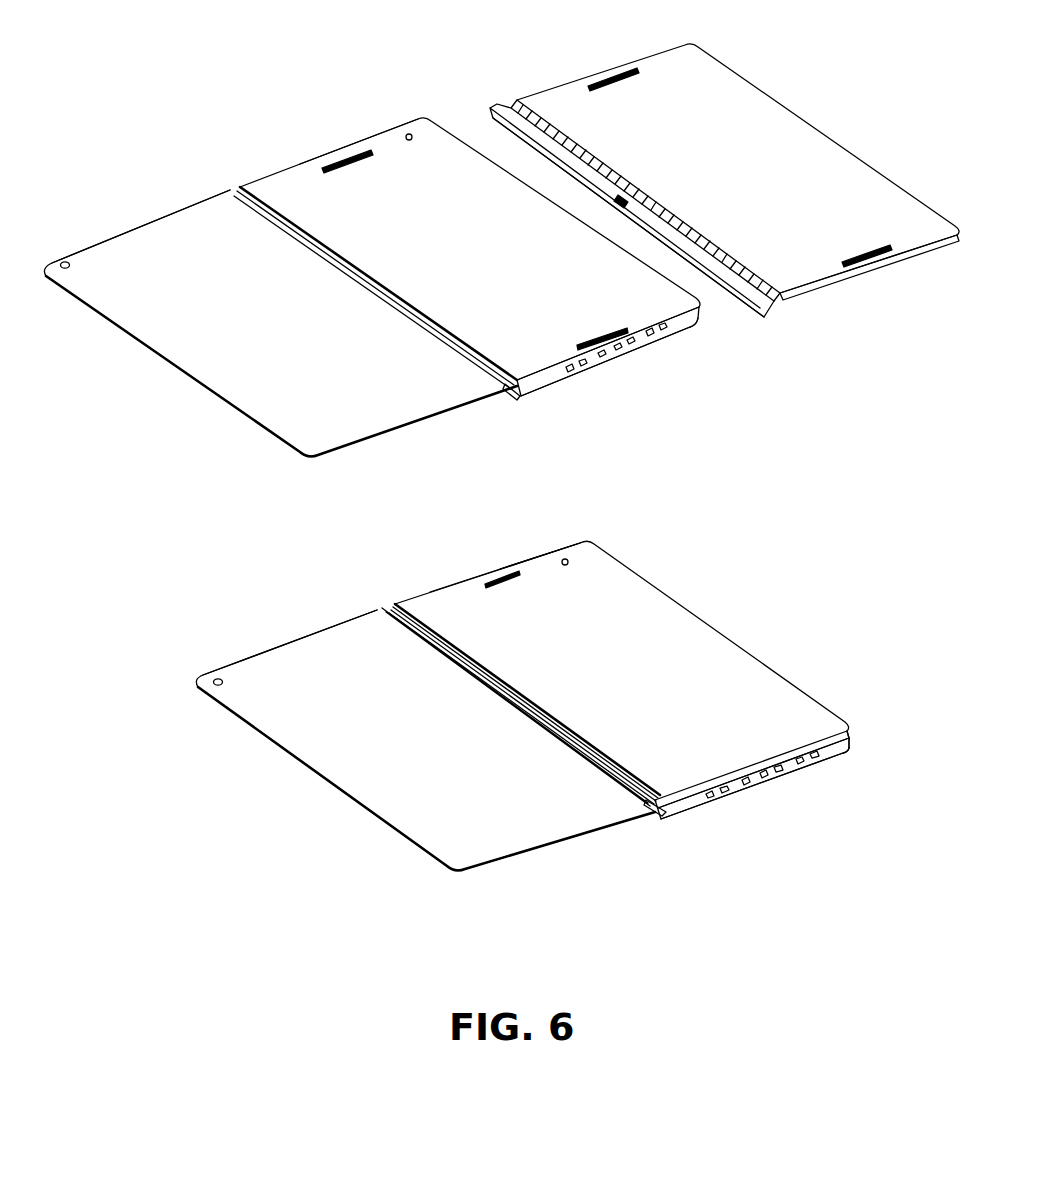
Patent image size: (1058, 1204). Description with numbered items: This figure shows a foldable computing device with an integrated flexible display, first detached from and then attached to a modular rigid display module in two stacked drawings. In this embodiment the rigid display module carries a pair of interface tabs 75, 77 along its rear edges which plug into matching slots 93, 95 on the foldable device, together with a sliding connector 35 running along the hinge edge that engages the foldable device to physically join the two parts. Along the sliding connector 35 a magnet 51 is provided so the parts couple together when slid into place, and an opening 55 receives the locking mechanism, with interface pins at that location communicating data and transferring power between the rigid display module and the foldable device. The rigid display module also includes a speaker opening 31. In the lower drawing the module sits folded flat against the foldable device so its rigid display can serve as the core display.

The speaker opening 31 is at (500, 573).
The sliding connector 35 is at (497, 108).
The magnet 51 is at (594, 177).
The opening 55 is at (620, 203).
The interface tab 75 is at (612, 71).
The interface tab 77 is at (878, 258).
The slot 93 is at (343, 156).
The slot 95 is at (640, 348).